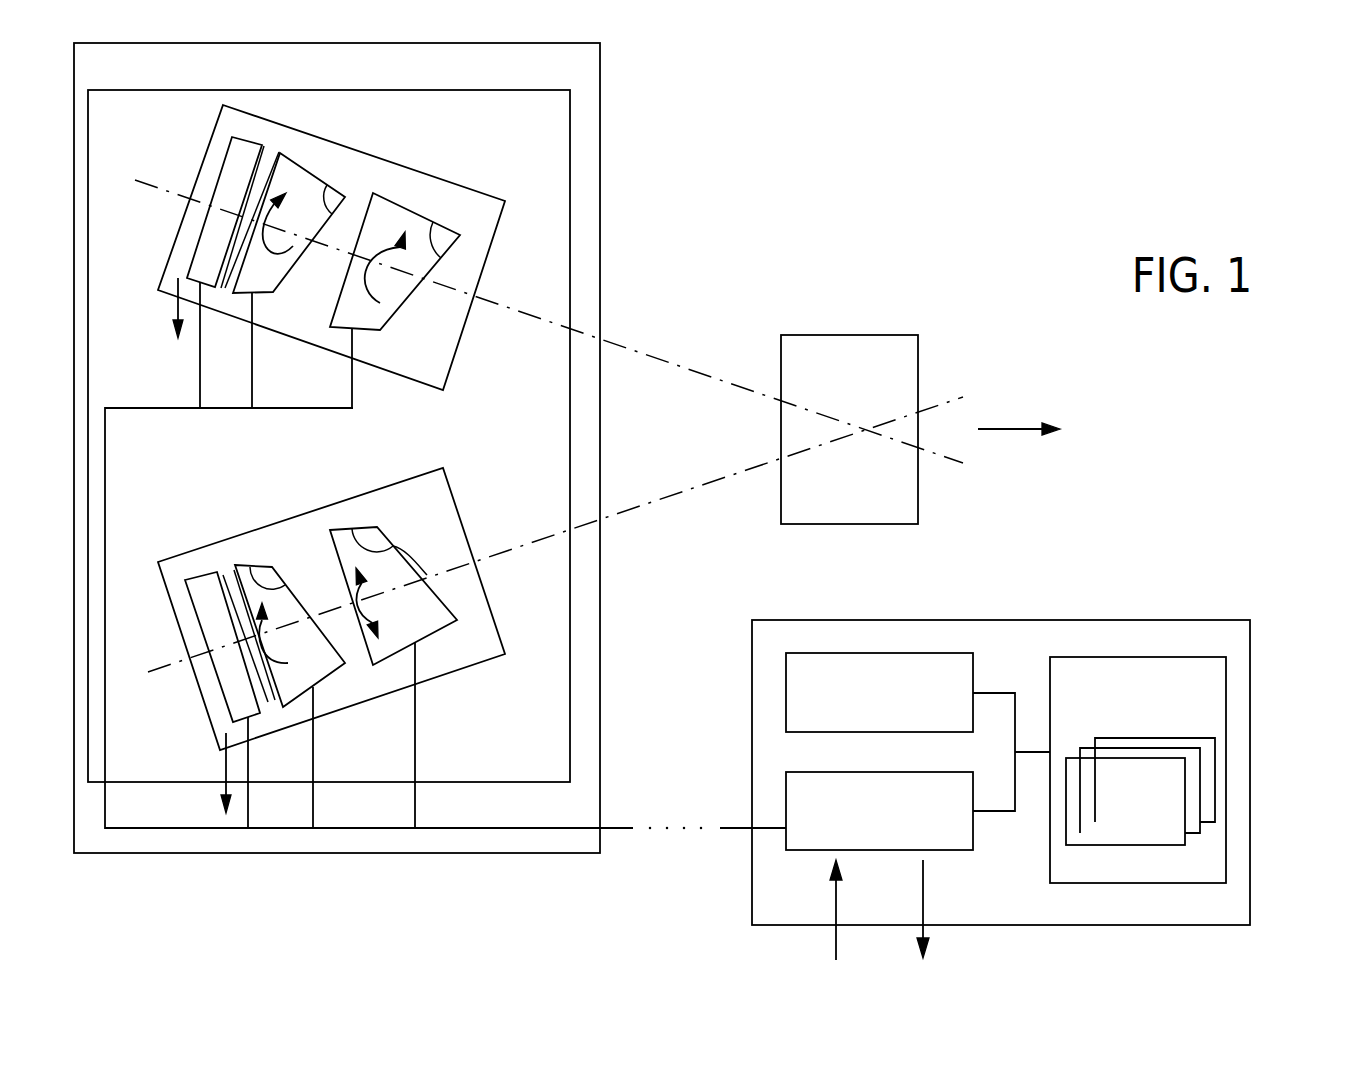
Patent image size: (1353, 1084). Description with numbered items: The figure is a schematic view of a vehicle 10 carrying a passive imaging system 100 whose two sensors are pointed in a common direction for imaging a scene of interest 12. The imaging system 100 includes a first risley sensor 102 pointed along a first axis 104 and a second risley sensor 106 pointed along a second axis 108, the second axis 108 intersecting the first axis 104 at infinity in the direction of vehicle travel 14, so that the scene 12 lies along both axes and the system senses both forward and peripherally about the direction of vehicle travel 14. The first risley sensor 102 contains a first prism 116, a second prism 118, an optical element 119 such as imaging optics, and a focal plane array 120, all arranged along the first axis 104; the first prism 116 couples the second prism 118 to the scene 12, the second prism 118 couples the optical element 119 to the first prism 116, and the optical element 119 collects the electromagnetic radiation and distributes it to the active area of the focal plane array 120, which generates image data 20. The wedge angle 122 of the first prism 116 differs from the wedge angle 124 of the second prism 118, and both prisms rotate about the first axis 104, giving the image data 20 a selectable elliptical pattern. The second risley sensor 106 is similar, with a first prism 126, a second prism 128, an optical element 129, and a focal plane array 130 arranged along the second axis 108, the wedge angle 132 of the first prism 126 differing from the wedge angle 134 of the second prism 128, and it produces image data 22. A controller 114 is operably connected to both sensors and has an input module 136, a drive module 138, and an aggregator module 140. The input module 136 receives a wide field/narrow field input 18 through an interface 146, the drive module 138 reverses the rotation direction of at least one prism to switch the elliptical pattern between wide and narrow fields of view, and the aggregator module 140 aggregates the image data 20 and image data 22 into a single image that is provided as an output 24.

The vehicle 10 is at (158, 853).
The scene of interest 12 is at (877, 335).
The direction of vehicle travel 14 is at (1015, 429).
The wide field/narrow field input 18 is at (836, 898).
The image data 20 is at (172, 297).
The image data 22 is at (226, 768).
The output 24 is at (923, 887).
The imaging system 100 is at (518, 770).
The first risley sensor 102 is at (498, 227).
The first axis 104 is at (662, 360).
The second risley sensor 106 is at (495, 620).
The second axis 108 is at (662, 498).
The controller 114 is at (895, 653).
The first prism 116 is at (405, 302).
The second prism 118 is at (282, 292).
The optical element 119 is at (280, 127).
The focal plane array 120 is at (224, 165).
The wedge angle 122 is at (417, 222).
The wedge angle 124 is at (312, 183).
The first prism 126 is at (342, 530).
The second prism 128 is at (243, 567).
The optical element 129 is at (227, 580).
The focal plane array 130 is at (195, 577).
The wedge angle 132 is at (427, 575).
The wedge angle 134 is at (267, 590).
The input module 136 is at (1217, 765).
The drive module 138 is at (1153, 845).
The aggregator module 140 is at (1200, 830).
The interface 146 is at (805, 852).